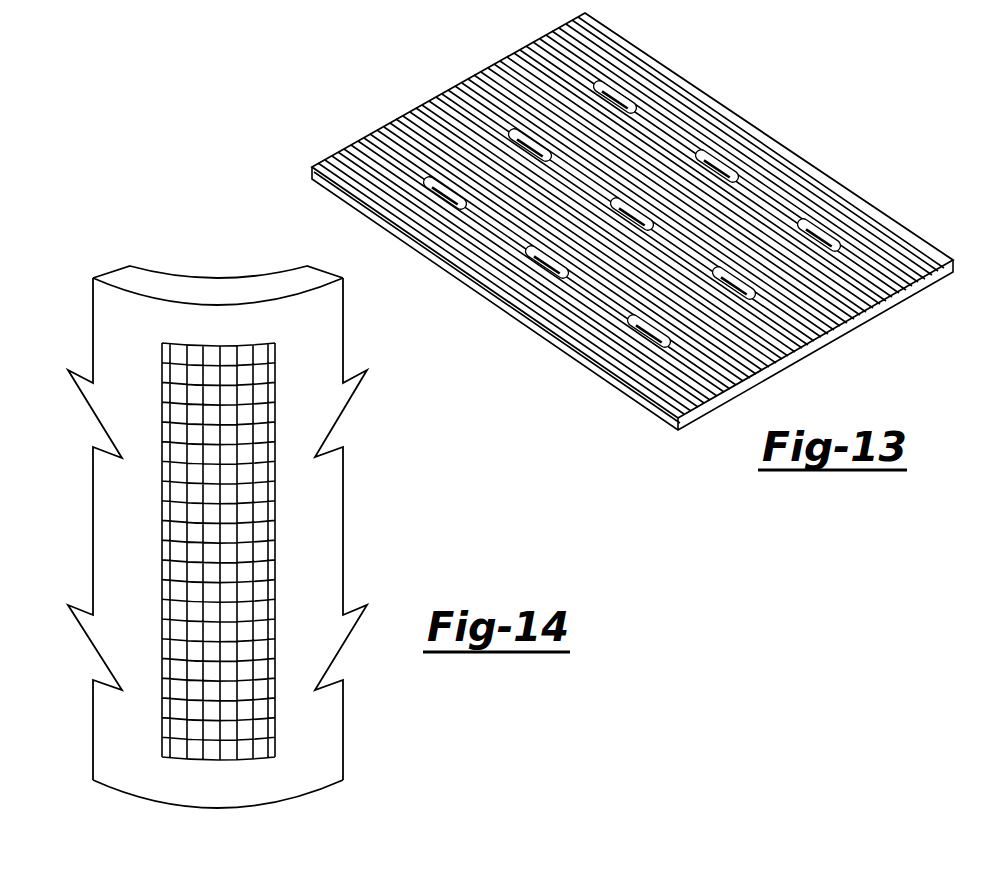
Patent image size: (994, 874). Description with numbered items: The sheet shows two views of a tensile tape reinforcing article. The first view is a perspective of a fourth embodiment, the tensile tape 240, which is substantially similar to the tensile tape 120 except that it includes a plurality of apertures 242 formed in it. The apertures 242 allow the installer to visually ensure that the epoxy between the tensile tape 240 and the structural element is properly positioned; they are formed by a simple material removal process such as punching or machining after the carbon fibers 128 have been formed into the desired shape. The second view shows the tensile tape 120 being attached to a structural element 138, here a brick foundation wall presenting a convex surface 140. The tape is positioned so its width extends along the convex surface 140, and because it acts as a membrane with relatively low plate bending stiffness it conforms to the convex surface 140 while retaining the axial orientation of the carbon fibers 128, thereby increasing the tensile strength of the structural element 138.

In FIG. 13, the tensile tape 240 is at (383, 62).
In FIG. 13, the apertures 242 is at (812, 222).
In FIG. 14, the structural element 138 is at (143, 240).
In FIG. 14, the convex surface 140 is at (327, 748).
In FIG. 14, the tensile tape 120 is at (258, 571).
In FIG. 14, the carbon fibers 128 is at (172, 610).